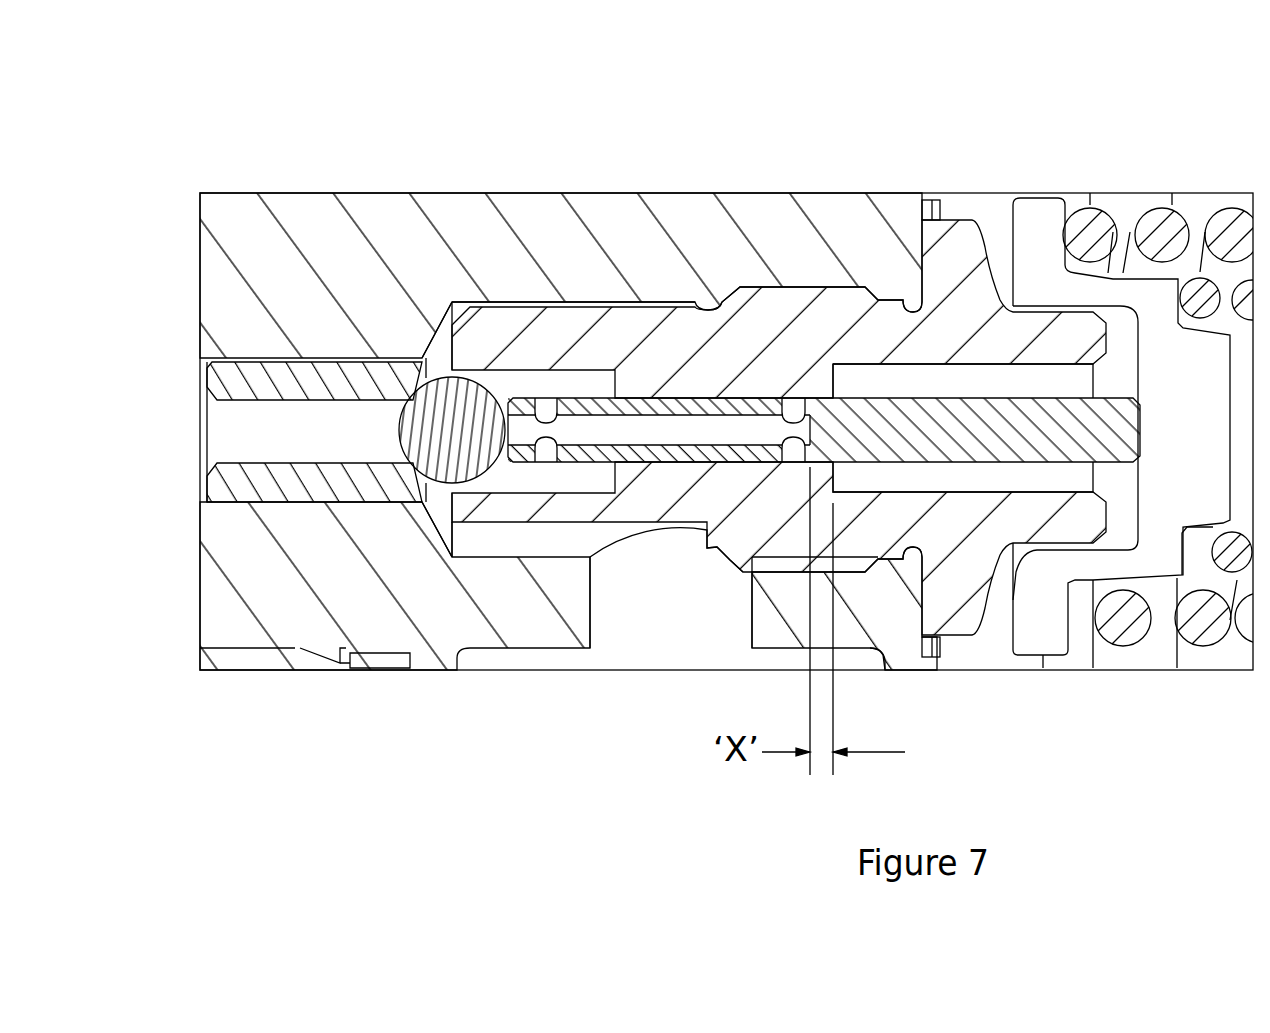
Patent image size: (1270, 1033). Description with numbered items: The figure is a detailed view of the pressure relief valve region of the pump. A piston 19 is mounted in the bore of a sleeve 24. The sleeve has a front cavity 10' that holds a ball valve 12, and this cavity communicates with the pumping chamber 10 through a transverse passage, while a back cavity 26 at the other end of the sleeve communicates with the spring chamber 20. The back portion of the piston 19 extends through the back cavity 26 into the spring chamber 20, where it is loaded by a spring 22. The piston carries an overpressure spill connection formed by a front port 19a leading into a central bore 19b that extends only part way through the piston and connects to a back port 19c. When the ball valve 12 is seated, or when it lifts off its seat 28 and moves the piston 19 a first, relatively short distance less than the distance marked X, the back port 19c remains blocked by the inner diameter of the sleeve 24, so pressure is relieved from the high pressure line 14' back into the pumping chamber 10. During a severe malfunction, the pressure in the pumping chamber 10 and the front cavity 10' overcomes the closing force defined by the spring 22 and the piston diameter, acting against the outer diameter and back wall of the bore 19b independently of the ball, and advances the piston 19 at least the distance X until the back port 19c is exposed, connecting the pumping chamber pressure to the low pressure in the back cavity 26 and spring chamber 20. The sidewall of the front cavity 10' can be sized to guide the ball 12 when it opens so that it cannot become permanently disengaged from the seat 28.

The pumping chamber 10 is at (726, 496).
The front cavity 10' is at (547, 568).
The ball valve 12 is at (442, 373).
The high pressure line 14' is at (314, 581).
The piston 19 is at (677, 402).
The front port 19a is at (543, 397).
The central bore 19b is at (650, 423).
The back port 19c is at (792, 399).
The spring chamber 20 is at (992, 210).
The spring 22 is at (1120, 637).
The sleeve 24 is at (848, 322).
The back cavity 26 is at (943, 380).
The seat 28 is at (418, 388).